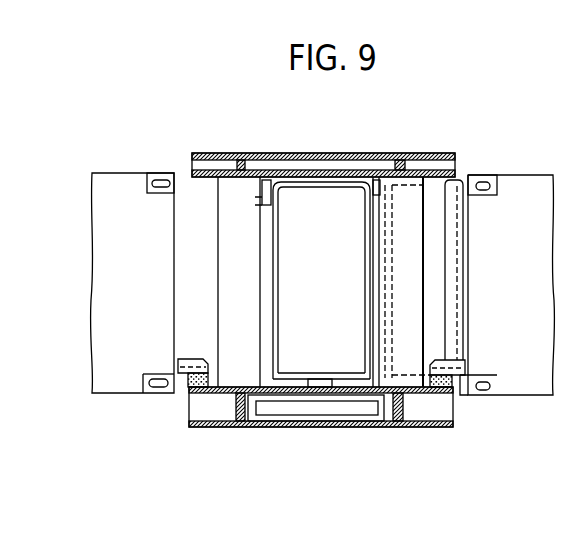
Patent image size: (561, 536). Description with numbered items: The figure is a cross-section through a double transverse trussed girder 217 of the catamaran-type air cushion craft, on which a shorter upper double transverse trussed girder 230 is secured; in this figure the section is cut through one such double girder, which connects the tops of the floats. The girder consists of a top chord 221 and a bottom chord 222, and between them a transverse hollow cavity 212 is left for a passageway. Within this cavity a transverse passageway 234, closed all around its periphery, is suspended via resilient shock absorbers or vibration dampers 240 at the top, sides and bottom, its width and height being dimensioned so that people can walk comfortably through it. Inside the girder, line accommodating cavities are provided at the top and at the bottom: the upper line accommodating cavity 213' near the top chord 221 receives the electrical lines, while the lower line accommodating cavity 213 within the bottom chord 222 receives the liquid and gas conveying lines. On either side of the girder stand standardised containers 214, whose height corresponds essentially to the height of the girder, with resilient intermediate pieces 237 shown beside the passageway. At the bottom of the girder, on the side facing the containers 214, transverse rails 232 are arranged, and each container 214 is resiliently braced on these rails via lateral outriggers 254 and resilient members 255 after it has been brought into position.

The container 214 is at (124, 186).
The double transverse trussed girder 217 is at (449, 151).
The upper double transverse trussed girder 230 is at (452, 147).
The top chord 221 is at (393, 154).
The transverse hollow cavity 212 is at (219, 282).
The transverse passageway 234 is at (300, 182).
The upper line accommodating cavity 213' is at (350, 147).
The resilient shock absorber or vibration damper 240 is at (262, 207).
The resilient intermediate piece 237 is at (432, 196).
The transverse rail 232 is at (200, 395).
The bottom chord 222 is at (286, 425).
The lower line accommodating cavity 213 is at (318, 434).
The lateral outrigger 254 is at (191, 359).
The resilient member 255 is at (190, 378).